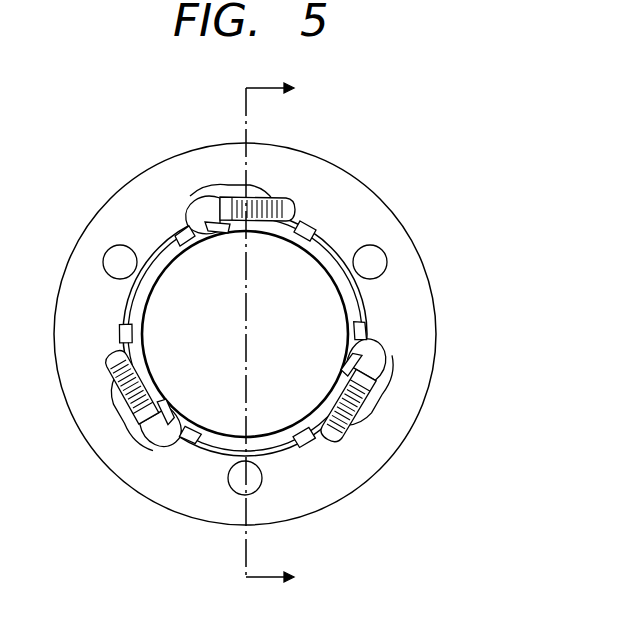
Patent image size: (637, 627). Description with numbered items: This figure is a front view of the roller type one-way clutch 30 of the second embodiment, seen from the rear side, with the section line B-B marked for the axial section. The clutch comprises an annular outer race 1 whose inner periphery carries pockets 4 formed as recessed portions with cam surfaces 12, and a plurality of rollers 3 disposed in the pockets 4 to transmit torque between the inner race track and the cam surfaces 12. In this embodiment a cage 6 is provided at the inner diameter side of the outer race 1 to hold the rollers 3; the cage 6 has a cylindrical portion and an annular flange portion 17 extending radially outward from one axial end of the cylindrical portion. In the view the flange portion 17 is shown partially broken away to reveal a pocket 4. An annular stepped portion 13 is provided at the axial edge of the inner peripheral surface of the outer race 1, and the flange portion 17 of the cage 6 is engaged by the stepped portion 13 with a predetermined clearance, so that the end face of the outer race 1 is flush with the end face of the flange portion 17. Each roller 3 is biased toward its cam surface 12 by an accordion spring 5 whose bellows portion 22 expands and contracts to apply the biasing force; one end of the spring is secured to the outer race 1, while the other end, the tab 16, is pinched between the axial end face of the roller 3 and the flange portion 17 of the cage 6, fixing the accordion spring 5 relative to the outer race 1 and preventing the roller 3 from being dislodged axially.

The outer race 1 is at (414, 270).
The roller 3 is at (207, 222).
The pocket 4 is at (237, 186).
The accordion spring 5 is at (270, 198).
The cage 6 is at (143, 330).
The cam surface 12 is at (207, 192).
The stepped portion 13 is at (183, 230).
The tab 16 is at (228, 221).
The flange portion 17 is at (195, 434).
The bellows portion 22 is at (343, 400).
The roller type one-way clutch 30 is at (398, 181).